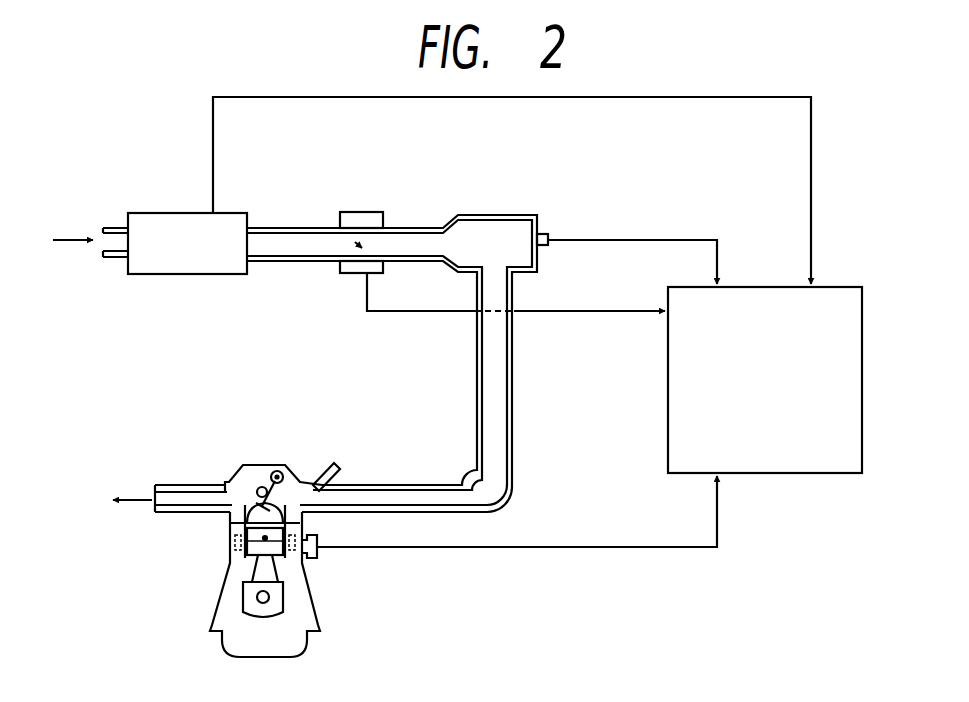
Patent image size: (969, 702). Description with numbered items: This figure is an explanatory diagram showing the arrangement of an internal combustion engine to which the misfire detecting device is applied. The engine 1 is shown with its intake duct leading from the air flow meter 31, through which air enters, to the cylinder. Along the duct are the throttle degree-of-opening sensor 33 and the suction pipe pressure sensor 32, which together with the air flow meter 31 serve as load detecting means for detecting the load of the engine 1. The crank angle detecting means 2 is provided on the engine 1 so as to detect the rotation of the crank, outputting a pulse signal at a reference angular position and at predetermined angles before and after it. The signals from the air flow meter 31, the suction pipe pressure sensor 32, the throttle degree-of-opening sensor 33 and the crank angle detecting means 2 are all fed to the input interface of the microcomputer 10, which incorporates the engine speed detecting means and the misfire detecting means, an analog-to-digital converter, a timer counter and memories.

The engine 1 is at (306, 646).
The crank angle detecting means 2 is at (318, 560).
The microcomputer 10 is at (822, 475).
The air flow meter 31 is at (228, 276).
The suction pipe pressure sensor 32 is at (548, 232).
The throttle degree-of-opening sensor 33 is at (345, 276).